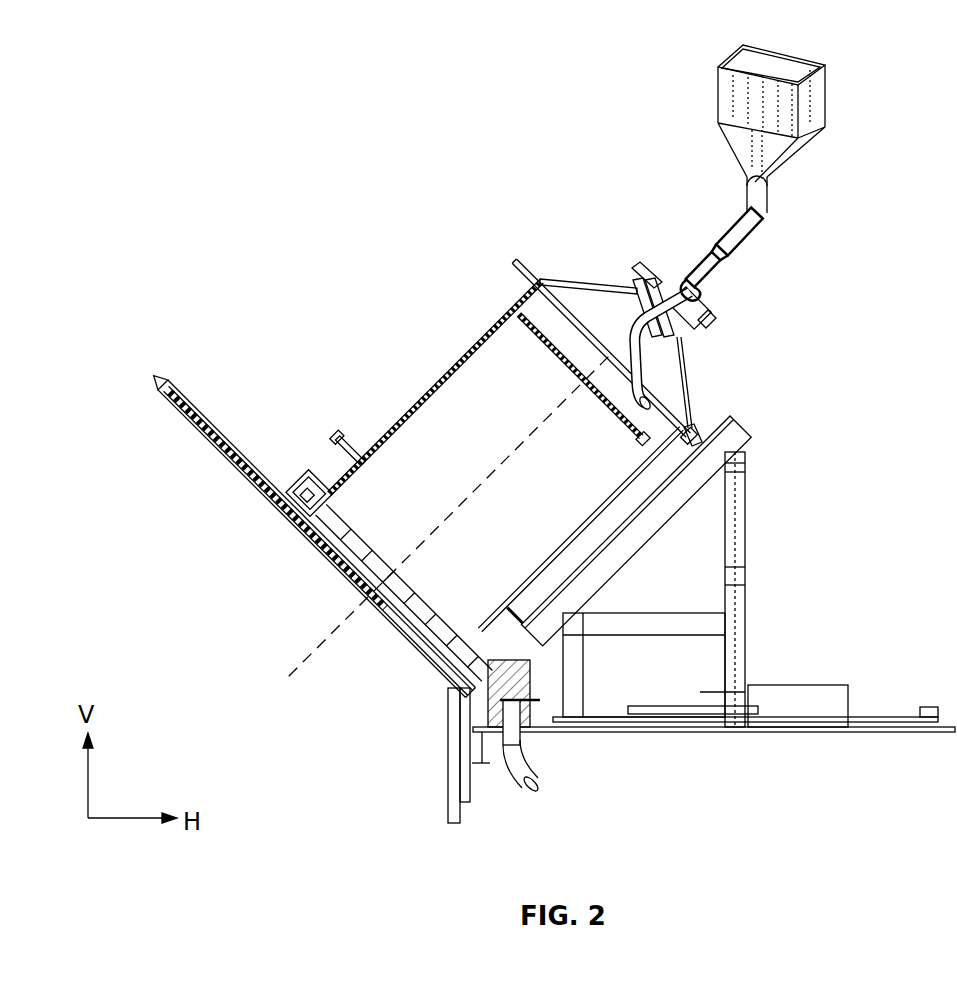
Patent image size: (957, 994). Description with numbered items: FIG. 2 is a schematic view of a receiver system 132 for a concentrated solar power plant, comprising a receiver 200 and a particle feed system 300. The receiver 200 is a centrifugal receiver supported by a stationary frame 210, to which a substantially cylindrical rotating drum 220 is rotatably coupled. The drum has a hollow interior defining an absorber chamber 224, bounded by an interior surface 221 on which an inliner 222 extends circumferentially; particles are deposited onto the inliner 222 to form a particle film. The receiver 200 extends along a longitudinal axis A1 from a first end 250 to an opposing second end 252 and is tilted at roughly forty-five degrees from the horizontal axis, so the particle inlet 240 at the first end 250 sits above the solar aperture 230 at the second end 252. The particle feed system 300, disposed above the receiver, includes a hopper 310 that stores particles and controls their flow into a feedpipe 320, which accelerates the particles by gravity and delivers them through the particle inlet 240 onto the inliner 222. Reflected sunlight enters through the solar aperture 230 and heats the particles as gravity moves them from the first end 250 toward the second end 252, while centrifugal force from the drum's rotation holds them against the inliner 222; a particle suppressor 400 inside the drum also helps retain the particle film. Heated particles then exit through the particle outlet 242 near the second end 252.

The receiver system 132 is at (199, 100).
The receiver 200 is at (332, 273).
The frame 210 is at (745, 568).
The rotating drum 220 is at (378, 445).
The interior surface 221 is at (582, 378).
The inliner 222 is at (517, 368).
The absorber chamber 224 is at (437, 438).
The solar aperture 230 is at (315, 565).
The particle inlet 240 is at (628, 285).
The particle outlet 242 is at (546, 791).
The first end 250 is at (663, 252).
The second end 252 is at (252, 506).
The particle feed system 300 is at (853, 215).
The hopper 310 is at (820, 100).
The feedpipe 320 is at (768, 222).
The particle suppressor 400 is at (640, 437).
The longitudinal axis A1 is at (436, 530).